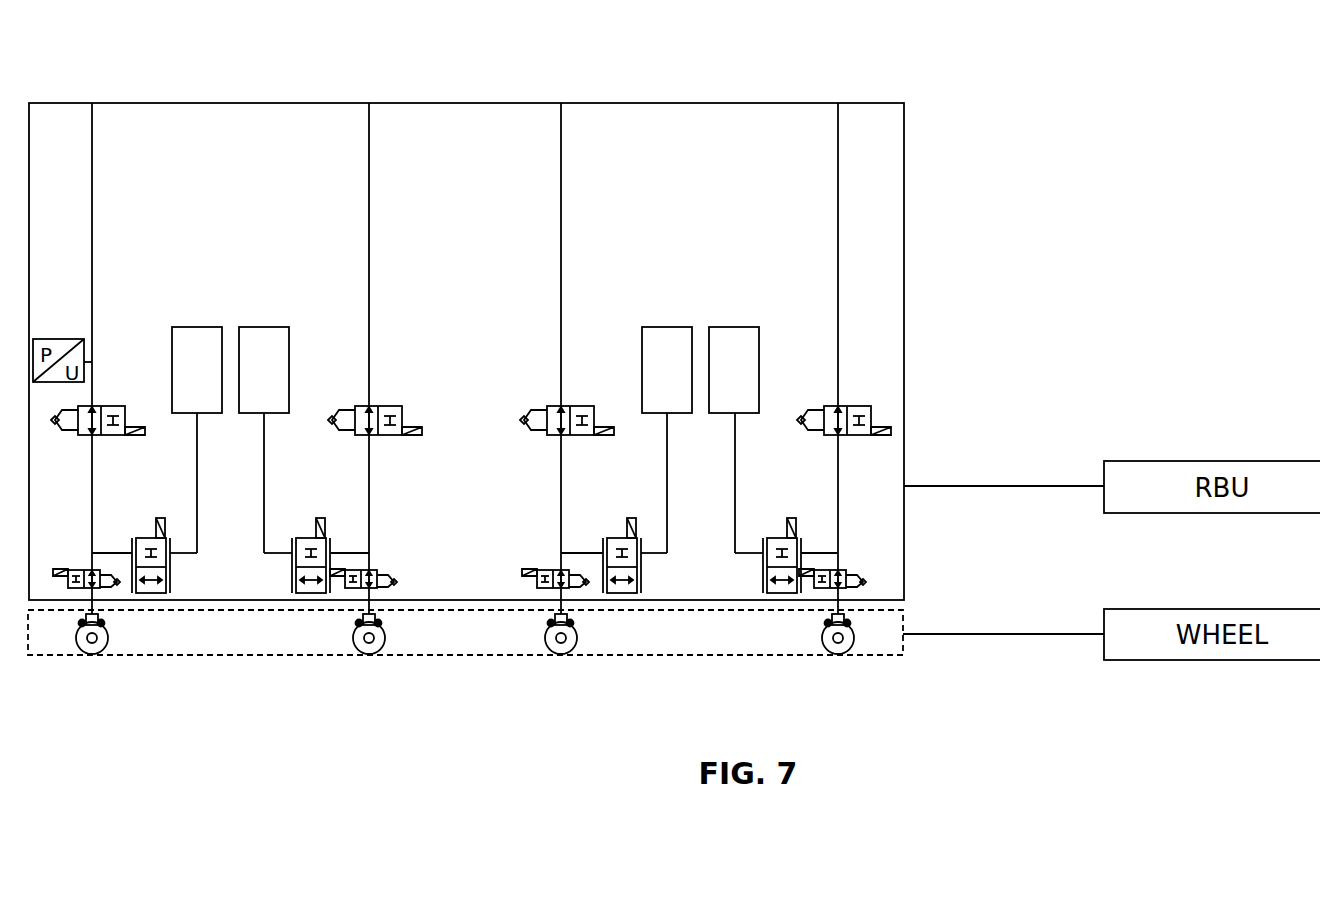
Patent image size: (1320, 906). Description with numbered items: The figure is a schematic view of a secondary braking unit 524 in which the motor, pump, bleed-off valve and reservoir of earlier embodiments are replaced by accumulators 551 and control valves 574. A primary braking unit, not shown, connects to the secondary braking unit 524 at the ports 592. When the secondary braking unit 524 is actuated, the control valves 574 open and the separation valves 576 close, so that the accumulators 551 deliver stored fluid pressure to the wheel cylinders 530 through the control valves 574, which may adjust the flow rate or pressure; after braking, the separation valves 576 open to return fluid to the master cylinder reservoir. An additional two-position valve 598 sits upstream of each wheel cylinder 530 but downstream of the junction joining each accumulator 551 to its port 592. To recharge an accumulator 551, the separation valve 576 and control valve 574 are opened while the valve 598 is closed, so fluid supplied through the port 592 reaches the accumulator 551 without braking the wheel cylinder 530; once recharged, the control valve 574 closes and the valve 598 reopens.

The secondary braking unit 524 is at (904, 250).
The port 592 is at (92, 103).
The accumulator 551 is at (196, 327).
The separation valve 576 is at (114, 406).
The control valve 574 is at (152, 538).
The valve 598 is at (76, 570).
The wheel cylinder 530 is at (100, 626).